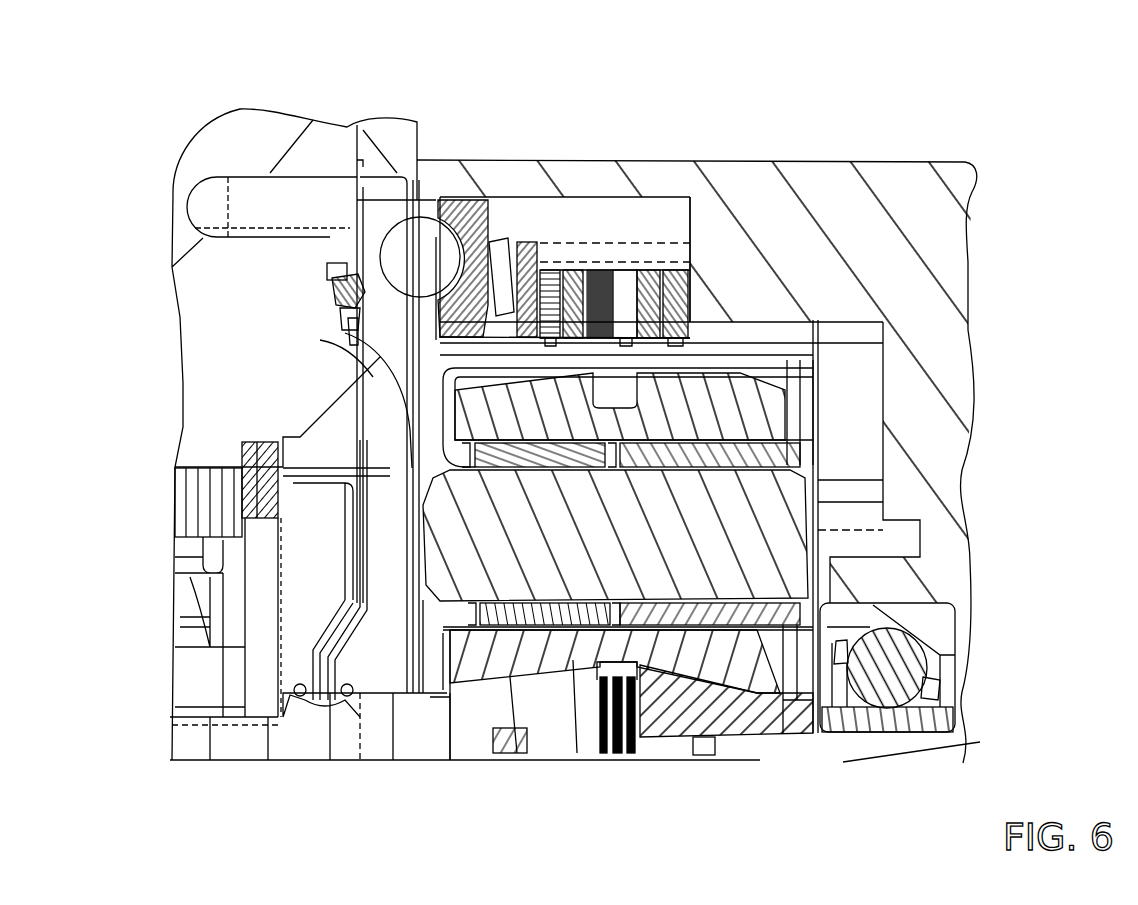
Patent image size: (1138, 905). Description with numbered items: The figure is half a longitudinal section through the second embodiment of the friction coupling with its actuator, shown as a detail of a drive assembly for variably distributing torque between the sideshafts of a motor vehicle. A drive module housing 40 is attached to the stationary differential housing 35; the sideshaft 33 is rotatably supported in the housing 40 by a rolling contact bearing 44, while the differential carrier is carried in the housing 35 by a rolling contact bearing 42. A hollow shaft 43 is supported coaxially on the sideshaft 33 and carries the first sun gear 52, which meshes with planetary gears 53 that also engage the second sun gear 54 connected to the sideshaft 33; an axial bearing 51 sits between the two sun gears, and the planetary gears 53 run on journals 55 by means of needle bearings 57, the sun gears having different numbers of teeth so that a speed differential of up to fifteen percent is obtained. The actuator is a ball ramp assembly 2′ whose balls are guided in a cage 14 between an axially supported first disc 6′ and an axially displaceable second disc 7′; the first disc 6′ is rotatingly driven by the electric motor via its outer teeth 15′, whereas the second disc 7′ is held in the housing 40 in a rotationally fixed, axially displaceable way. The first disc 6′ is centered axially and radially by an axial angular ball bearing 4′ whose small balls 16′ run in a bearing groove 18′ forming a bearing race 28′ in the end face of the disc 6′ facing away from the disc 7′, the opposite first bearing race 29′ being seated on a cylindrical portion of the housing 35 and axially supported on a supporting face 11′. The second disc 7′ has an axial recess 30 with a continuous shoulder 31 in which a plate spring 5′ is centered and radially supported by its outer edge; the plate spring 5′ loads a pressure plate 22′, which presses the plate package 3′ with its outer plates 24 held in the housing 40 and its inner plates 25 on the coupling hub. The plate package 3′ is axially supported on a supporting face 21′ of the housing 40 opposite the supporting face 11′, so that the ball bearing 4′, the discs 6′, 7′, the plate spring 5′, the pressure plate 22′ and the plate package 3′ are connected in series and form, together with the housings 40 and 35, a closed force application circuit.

The ball ramp assembly 2′ is at (443, 145).
The plate package 3′ is at (636, 228).
The ball bearing 4′ is at (330, 205).
The plate spring 5′ is at (530, 237).
The first disc 6′ is at (373, 220).
The second disc 7′ is at (470, 190).
The supporting face 11′ is at (323, 247).
The cage 14 is at (427, 220).
The outer teeth 15′ is at (387, 193).
The balls 16′ is at (333, 273).
The bearing groove 18′ is at (333, 307).
The supporting face 21′ is at (680, 223).
The pressure plate 22′ is at (537, 240).
The outer plates 24 is at (567, 270).
The inner plates 25 is at (597, 270).
The bearing race 28′ is at (373, 317).
The first bearing race 29′ is at (323, 292).
The axial recess 30 is at (460, 343).
The continuous shoulder 31 is at (510, 243).
The sideshaft 33 is at (957, 740).
The differential housing 35 is at (243, 130).
The housing 40 is at (753, 190).
The rolling contact bearing 42 is at (187, 487).
The hollow shaft 43 is at (377, 730).
The rolling contact bearing 44 is at (933, 623).
The axial bearing 51 is at (617, 753).
The first sun gear 52 is at (547, 687).
The planetary gears 53 is at (763, 420).
The second sun gear 54 is at (730, 713).
The journals 55 is at (790, 523).
The needle bearings 57 is at (817, 460).